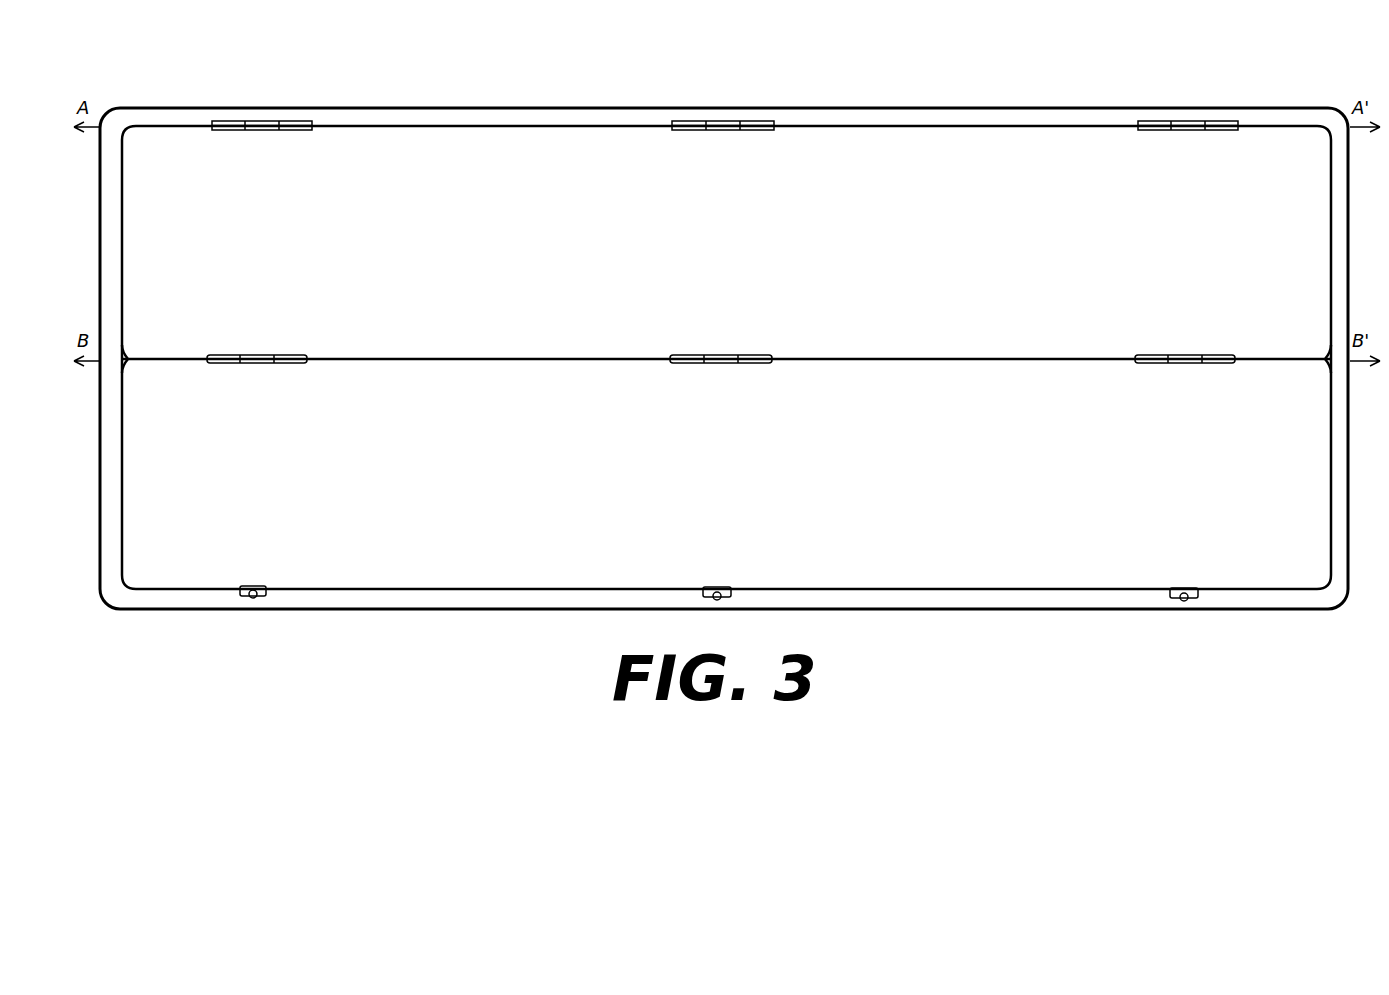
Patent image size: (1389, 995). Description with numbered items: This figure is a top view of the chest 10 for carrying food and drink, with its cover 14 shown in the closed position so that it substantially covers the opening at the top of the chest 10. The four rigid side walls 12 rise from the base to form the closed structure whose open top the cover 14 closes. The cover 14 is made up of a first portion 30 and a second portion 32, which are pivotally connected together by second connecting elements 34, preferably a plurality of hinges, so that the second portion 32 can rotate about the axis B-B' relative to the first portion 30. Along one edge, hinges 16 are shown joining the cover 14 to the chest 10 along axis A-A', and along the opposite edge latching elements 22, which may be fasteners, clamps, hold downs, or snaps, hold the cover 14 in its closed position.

The chest 10 is at (707, 36).
The side walls 12 is at (520, 108).
The cover 14 is at (858, 142).
The hinges 16 is at (257, 122).
The latching elements 22 is at (248, 598).
The first portion 30 is at (597, 247).
The second portion 32 is at (509, 477).
The second connecting elements 34 is at (247, 357).